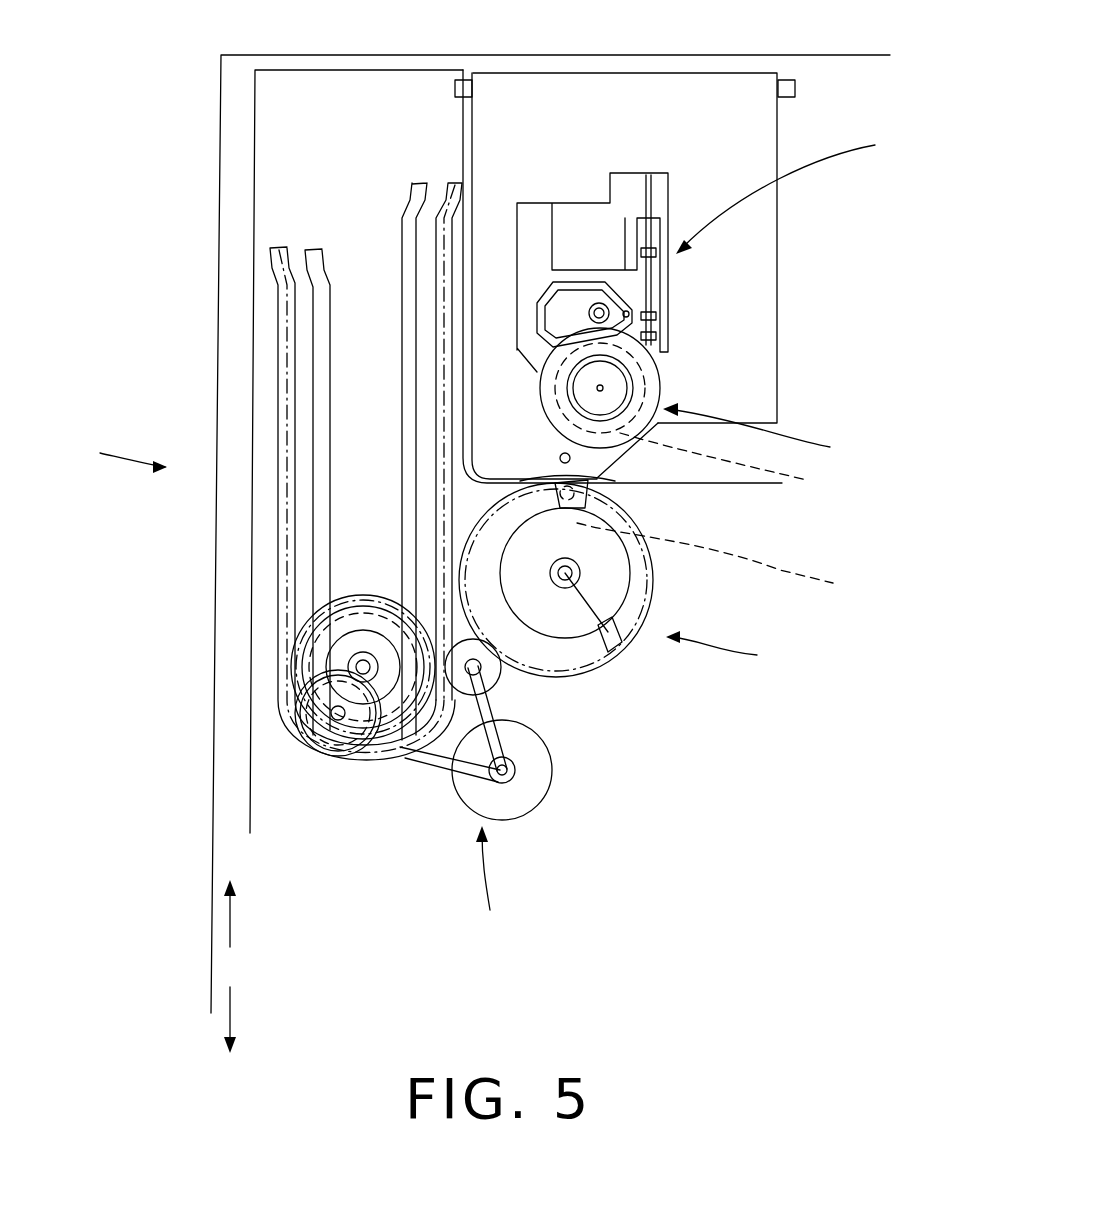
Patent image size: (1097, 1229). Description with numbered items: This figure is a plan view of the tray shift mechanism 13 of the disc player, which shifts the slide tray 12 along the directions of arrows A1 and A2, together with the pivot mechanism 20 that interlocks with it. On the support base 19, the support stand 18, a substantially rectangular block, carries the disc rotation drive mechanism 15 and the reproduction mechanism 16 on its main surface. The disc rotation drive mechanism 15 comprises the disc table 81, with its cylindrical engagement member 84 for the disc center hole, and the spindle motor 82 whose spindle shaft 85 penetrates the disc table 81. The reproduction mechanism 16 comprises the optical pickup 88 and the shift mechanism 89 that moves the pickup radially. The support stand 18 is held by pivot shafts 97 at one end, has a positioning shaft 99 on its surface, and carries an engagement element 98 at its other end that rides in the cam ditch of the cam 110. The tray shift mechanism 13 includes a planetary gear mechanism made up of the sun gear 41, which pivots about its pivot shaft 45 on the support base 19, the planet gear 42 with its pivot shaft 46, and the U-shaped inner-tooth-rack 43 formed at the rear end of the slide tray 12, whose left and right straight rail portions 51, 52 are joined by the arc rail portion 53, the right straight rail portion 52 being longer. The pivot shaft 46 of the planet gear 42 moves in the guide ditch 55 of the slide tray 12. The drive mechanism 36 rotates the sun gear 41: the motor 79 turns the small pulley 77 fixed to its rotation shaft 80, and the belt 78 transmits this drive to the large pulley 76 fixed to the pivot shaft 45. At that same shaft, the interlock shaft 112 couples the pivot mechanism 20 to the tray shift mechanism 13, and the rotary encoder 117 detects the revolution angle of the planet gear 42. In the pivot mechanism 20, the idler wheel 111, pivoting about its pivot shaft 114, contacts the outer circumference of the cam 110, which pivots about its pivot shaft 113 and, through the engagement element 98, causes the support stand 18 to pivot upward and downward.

The slide tray 12 is at (252, 417).
The tray shift mechanism 13 is at (42, 481).
The disc rotation drive mechanism 15 is at (711, 401).
The reproduction mechanism 16 is at (880, 159).
The support stand 18 is at (752, 247).
The support base 19 is at (217, 313).
The pivot mechanism 20 is at (773, 674).
The drive mechanism 36 is at (485, 954).
The sun gear 41 is at (380, 680).
The planet gear 42 is at (337, 745).
The inner-tooth-rack 43 is at (350, 740).
The pivot shaft 45 is at (357, 652).
The pivot shaft 46 is at (312, 747).
The straight rail portion 51 is at (283, 583).
The straight rail portion 52 is at (448, 443).
The arc rail portion 53 is at (368, 745).
The guide ditch 55 is at (320, 527).
The large pulley 76 is at (378, 615).
The small pulley 77 is at (500, 776).
The belt 78 is at (430, 762).
The motor 79 is at (537, 778).
The rotation shaft 80 is at (507, 773).
The disc table 81 is at (640, 390).
The spindle motor 82 is at (808, 481).
The engagement member 84 is at (613, 373).
The spindle shaft 85 is at (600, 390).
The optical pickup 88 is at (577, 307).
The shift mechanism 89 is at (657, 303).
The pivot shaft 97 is at (455, 90).
The engagement element 98 is at (833, 583).
The positioning shaft 99 is at (575, 460).
The cam 110 is at (610, 586).
The idler wheel 111 is at (487, 677).
The interlock shaft 112 is at (293, 625).
The pivot shaft 113 is at (632, 645).
The pivot shaft 114 is at (500, 690).
The rotary encoder 117 is at (292, 655).
The direction A1 is at (249, 917).
The direction A2 is at (249, 1020).